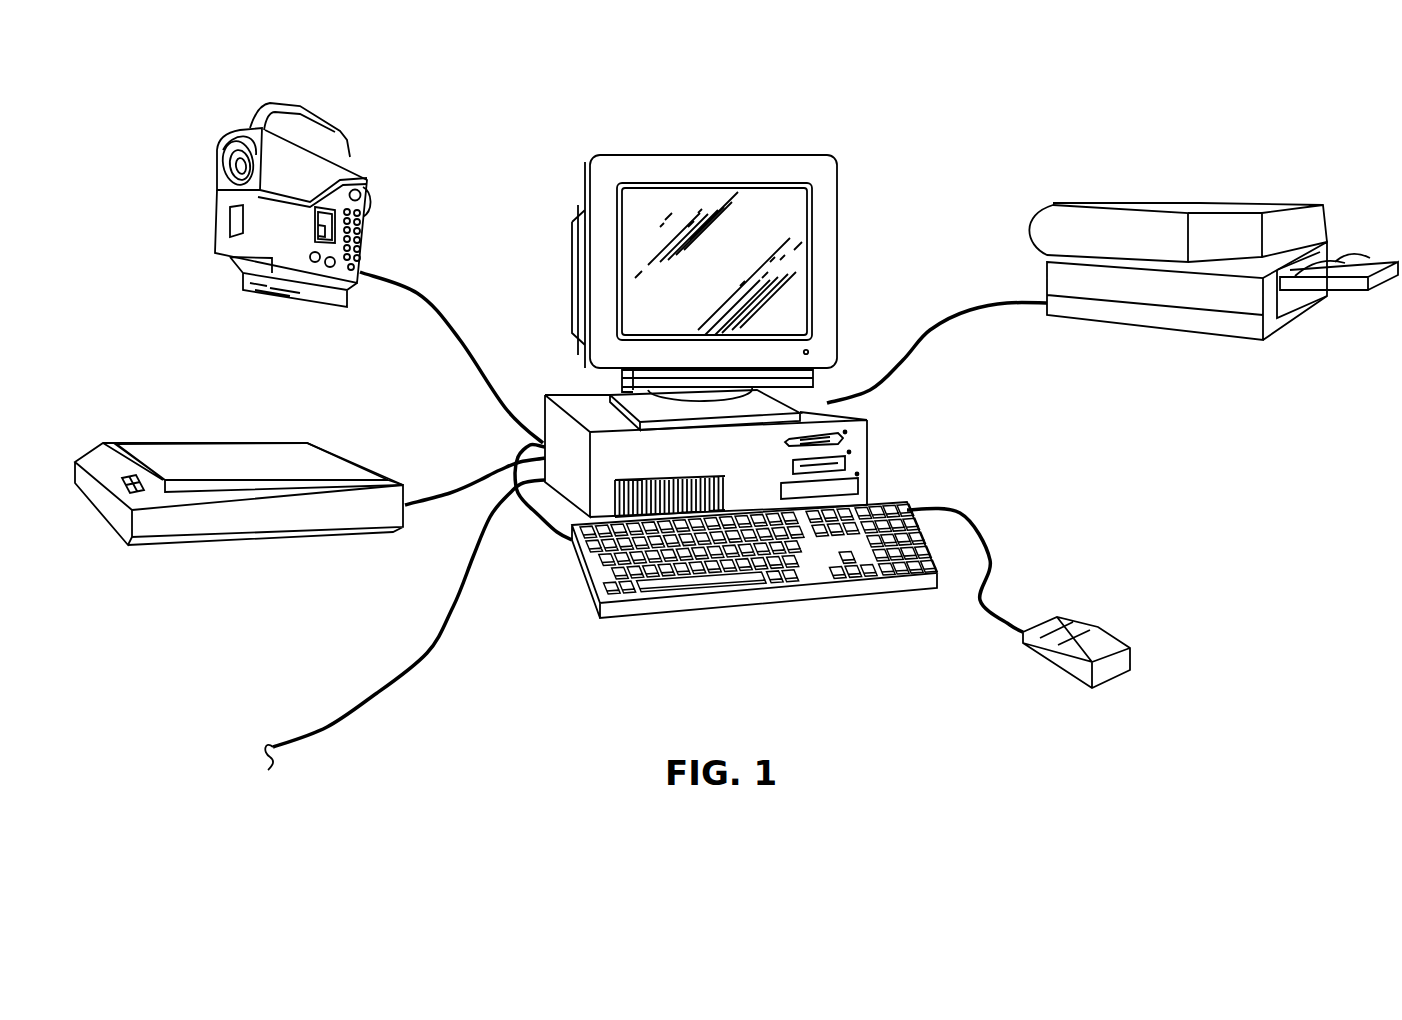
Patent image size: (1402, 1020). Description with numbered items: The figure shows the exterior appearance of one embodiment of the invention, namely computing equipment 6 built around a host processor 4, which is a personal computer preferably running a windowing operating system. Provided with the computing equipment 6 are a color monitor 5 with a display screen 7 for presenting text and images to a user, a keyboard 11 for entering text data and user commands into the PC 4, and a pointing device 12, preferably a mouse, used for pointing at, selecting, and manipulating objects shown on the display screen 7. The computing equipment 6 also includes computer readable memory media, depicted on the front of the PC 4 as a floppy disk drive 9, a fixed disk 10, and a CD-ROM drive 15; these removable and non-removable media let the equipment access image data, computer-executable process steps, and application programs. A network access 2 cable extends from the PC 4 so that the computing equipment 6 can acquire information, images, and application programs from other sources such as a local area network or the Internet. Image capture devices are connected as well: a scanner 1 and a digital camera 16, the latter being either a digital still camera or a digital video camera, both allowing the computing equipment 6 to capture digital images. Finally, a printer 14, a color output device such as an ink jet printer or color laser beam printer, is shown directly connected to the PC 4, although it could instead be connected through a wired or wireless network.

The scanner 1 is at (293, 535).
The network access 2 is at (310, 745).
The host processor 4 is at (565, 394).
The color monitor 5 is at (710, 155).
The computing equipment 6 is at (815, 117).
The display screen 7 is at (793, 227).
The floppy disk drive 9 is at (843, 438).
The fixed disk 10 is at (858, 490).
The keyboard 11 is at (685, 595).
The pointing device 12 is at (1108, 672).
The printer 14 is at (1103, 188).
The CD-ROM drive 15 is at (850, 465).
The digital camera 16 is at (368, 180).